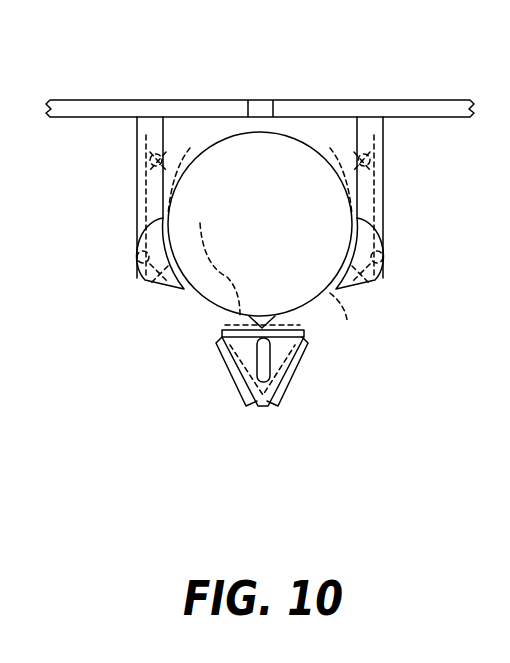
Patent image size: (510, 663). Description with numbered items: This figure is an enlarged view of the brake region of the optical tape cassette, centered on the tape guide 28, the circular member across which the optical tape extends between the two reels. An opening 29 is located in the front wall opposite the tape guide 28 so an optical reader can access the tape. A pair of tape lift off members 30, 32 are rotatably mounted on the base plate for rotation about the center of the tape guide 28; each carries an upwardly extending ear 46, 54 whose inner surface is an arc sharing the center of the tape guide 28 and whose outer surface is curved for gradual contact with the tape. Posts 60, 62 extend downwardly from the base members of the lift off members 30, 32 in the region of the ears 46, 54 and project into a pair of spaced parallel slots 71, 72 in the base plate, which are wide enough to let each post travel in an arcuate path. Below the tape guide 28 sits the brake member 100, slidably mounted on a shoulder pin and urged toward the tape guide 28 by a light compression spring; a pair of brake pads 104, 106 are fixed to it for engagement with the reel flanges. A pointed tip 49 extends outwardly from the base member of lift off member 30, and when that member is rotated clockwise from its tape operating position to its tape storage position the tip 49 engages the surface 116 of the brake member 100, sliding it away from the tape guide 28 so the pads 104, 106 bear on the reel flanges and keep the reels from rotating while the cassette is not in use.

The tape guide 28 is at (318, 275).
The opening 29 is at (258, 110).
The tape lift off member 30 is at (122, 168).
The tape lift off member 32 is at (397, 167).
The ear 46 is at (148, 281).
The pointed tip 49 is at (264, 318).
The ear 54 is at (372, 279).
The post 60 is at (150, 152).
The post 62 is at (370, 152).
The slot 71 is at (138, 128).
The slot 72 is at (382, 128).
The brake member 100 is at (221, 394).
The brake pad 104 is at (243, 378).
The brake pad 106 is at (283, 378).
The surface 116 is at (353, 365).